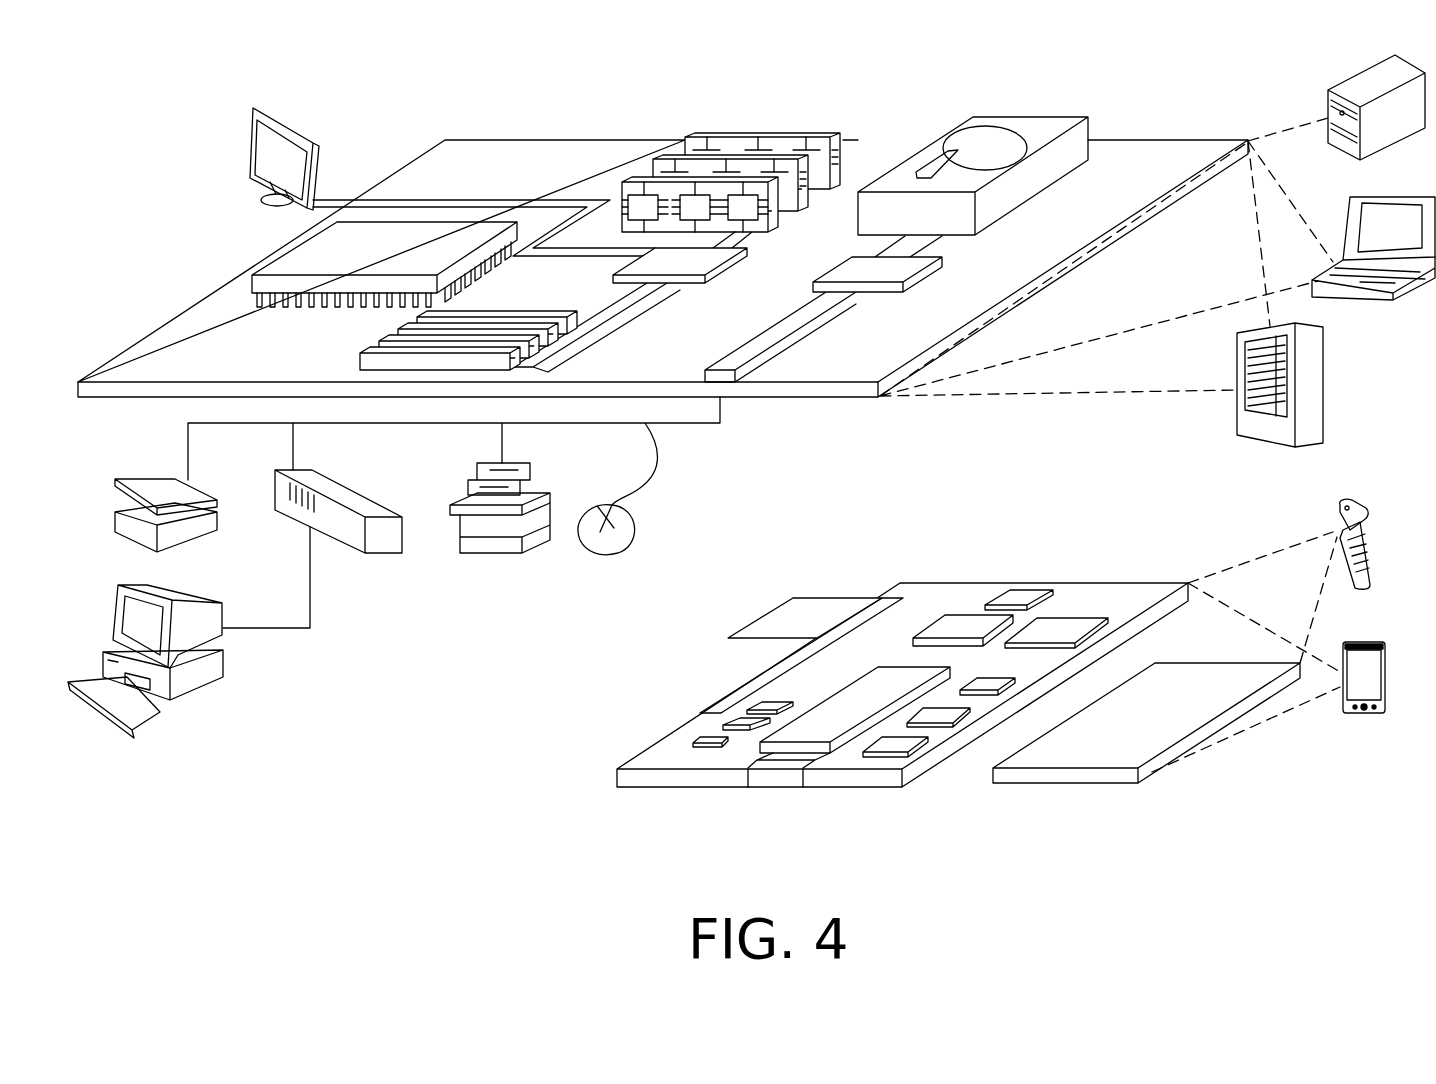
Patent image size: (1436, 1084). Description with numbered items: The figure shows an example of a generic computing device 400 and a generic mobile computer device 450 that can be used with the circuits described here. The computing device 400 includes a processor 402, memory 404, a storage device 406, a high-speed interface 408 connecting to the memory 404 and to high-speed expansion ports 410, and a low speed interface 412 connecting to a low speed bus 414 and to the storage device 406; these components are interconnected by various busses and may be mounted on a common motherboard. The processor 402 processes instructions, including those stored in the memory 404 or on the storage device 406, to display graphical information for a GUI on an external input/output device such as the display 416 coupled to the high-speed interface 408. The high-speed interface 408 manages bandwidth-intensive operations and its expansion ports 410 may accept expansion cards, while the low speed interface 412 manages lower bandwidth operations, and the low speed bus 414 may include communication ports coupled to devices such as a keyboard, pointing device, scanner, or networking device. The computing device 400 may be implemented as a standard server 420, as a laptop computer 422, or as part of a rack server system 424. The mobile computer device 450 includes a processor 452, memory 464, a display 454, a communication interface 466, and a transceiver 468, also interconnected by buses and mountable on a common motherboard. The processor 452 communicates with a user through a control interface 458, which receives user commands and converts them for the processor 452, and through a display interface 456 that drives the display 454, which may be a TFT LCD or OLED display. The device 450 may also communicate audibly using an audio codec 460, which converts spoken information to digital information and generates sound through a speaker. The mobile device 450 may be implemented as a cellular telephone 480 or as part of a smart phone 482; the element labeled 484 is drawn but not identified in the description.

The computing device 400 is at (388, 80).
The processor 402 is at (283, 250).
The memory 404 is at (767, 133).
The storage device 406 is at (1021, 118).
The high-speed interface 408 is at (694, 255).
The high-speed expansion ports 410 is at (388, 342).
The low speed interface 412 is at (849, 266).
The low speed bus 414 is at (728, 363).
The display 416 is at (259, 108).
The standard server 420 is at (1352, 81).
The laptop computer 422 is at (1407, 195).
The rack server system 424 is at (1324, 383).
The mobile computer device 450 is at (1239, 783).
The processor 452 is at (818, 716).
The display 454 is at (1188, 680).
The display interface 456 is at (904, 746).
The control interface 458 is at (940, 712).
The audio codec 460 is at (986, 683).
The memory 464 is at (725, 720).
The communication interface 466 is at (965, 620).
The transceiver 468 is at (1064, 622).
The cellular telephone 480 is at (1022, 595).
The smart phone 482 is at (882, 598).
The battery 484 is at (793, 598).